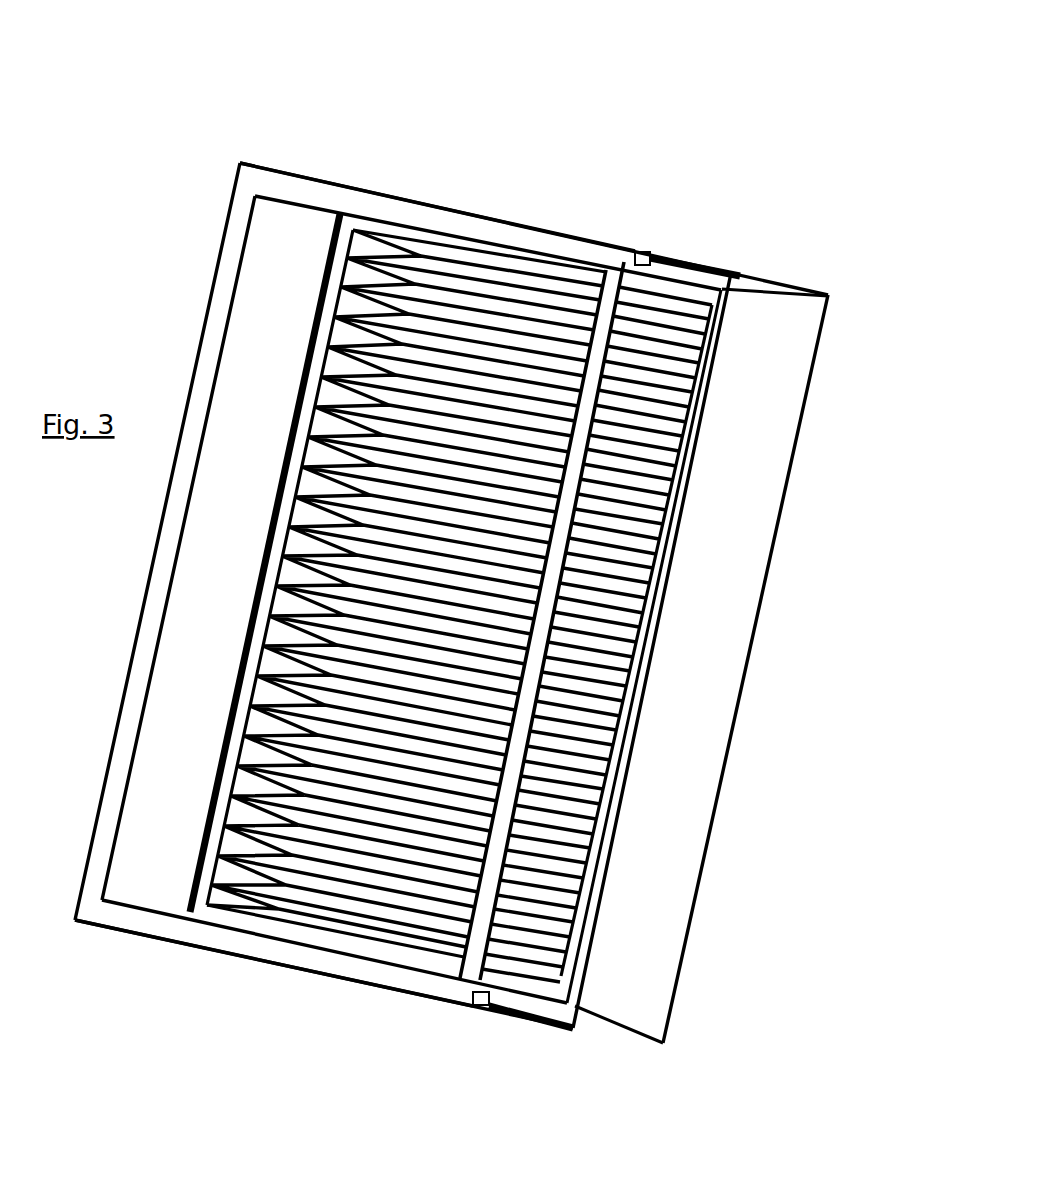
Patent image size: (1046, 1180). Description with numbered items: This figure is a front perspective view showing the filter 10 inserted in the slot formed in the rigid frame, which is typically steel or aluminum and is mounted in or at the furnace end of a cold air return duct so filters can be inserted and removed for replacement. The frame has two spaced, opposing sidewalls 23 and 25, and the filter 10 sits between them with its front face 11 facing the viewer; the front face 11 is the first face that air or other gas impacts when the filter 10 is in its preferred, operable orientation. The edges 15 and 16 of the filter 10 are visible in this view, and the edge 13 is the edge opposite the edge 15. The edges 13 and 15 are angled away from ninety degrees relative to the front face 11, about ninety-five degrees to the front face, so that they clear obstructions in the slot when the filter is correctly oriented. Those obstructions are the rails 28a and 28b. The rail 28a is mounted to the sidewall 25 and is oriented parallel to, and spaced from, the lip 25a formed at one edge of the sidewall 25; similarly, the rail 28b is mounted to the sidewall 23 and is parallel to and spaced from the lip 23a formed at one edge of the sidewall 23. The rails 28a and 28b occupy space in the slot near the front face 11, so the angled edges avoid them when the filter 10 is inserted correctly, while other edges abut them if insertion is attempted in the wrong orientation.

The filter 10 is at (740, 799).
The front face 11 is at (456, 345).
The edge 13 is at (581, 1016).
The edge 15 is at (729, 286).
The edge 16 is at (712, 650).
The sidewall 23 is at (373, 978).
The lip 23a is at (195, 930).
The sidewall 25 is at (562, 230).
The lip 25a is at (308, 192).
The rail 28a is at (642, 257).
The rail 28b is at (481, 1007).